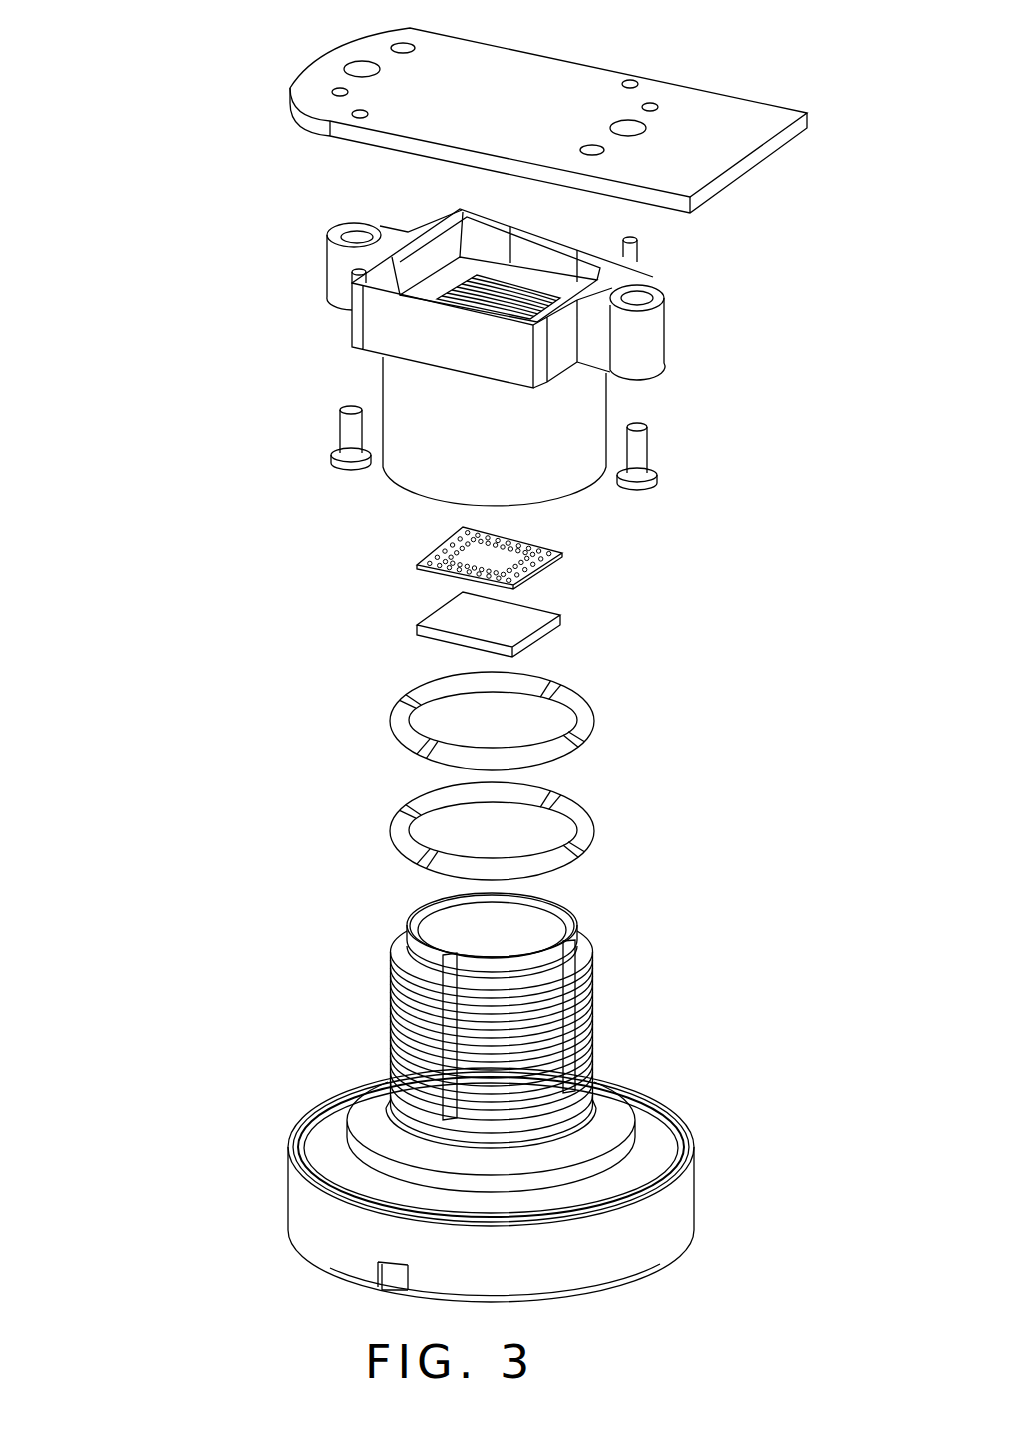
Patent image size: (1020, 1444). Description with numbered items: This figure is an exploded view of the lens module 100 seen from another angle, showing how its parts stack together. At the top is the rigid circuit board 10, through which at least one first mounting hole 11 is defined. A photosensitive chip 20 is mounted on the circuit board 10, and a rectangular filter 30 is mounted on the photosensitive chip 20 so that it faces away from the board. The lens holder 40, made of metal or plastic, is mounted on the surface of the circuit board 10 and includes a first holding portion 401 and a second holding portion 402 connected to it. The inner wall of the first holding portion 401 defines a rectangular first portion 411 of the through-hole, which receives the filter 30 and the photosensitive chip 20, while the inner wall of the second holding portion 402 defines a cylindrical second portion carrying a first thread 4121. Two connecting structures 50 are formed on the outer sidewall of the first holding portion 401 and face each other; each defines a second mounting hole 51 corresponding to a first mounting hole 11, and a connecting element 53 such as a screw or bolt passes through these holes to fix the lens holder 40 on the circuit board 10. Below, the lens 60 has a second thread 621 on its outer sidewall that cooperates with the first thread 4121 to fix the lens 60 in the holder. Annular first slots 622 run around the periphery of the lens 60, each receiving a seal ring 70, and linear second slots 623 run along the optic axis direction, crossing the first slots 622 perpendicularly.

The lens module 100 is at (170, 46).
The circuit board 10 is at (688, 97).
The first mounting hole 11 is at (355, 60).
The first portion 411 is at (458, 256).
The second mounting hole 51 is at (638, 298).
The connecting structure 50 is at (645, 349).
The first holding portion 401 is at (510, 352).
The second holding portion 402 is at (550, 440).
The lens holder 40 is at (744, 360).
The first thread 4121 is at (497, 290).
The connecting element 53 is at (640, 461).
The photosensitive chip 20 is at (517, 563).
The filter 30 is at (537, 620).
The seal ring 70 is at (580, 707).
The second thread 621 is at (566, 980).
The second slot 623 is at (436, 1008).
The first slot 622 is at (400, 1076).
The lens 60 is at (597, 1015).